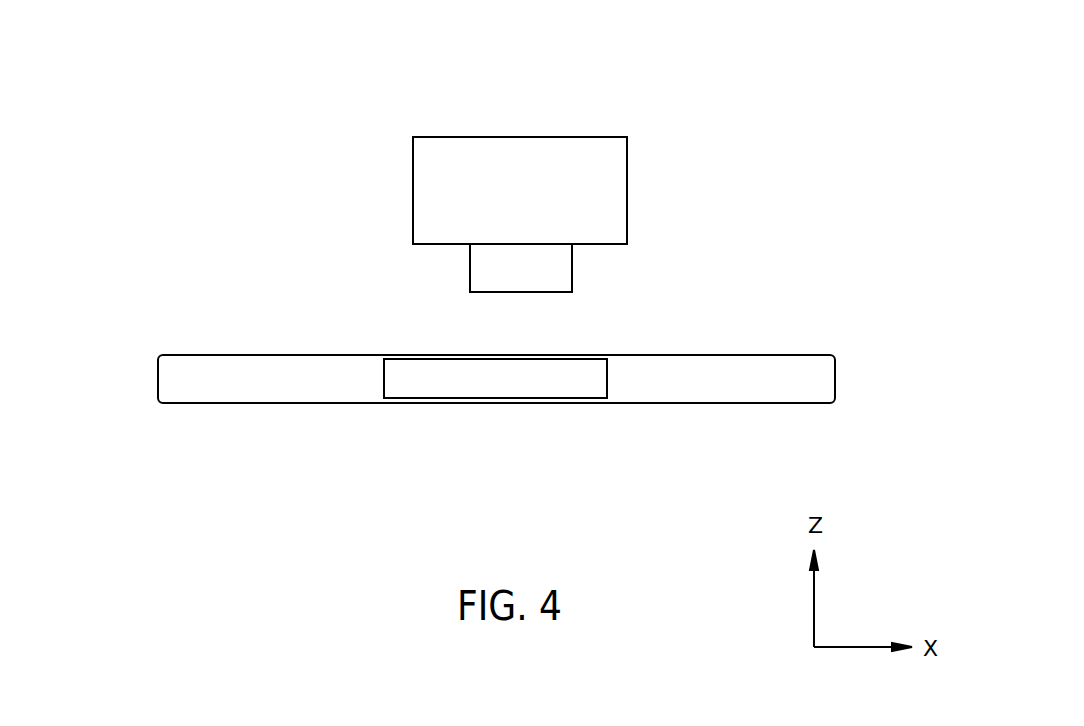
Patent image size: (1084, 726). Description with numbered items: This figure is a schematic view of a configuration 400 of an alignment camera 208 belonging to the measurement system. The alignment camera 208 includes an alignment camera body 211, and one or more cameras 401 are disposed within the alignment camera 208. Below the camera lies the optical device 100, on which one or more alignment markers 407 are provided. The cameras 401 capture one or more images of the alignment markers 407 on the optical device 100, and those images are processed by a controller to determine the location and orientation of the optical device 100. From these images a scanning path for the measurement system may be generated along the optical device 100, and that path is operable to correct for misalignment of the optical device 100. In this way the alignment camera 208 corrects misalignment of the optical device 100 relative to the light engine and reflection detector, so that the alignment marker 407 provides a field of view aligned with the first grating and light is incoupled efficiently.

The configuration 400 is at (155, 143).
The camera 401 is at (627, 188).
The optical device 100 is at (835, 375).
The alignment marker 407 is at (492, 378).
The alignment camera 208 is at (862, 164).
The alignment camera body 211 is at (888, 244).